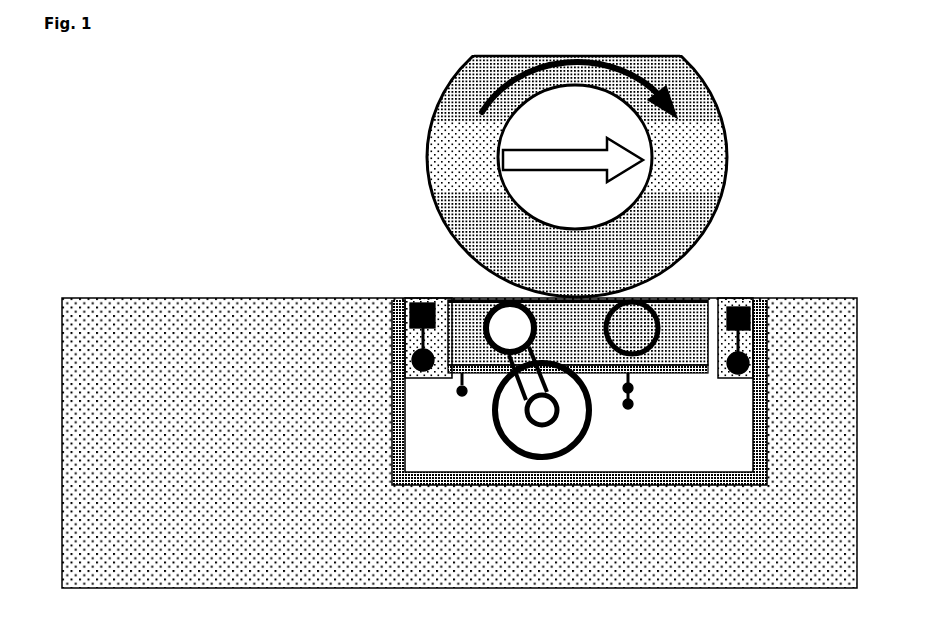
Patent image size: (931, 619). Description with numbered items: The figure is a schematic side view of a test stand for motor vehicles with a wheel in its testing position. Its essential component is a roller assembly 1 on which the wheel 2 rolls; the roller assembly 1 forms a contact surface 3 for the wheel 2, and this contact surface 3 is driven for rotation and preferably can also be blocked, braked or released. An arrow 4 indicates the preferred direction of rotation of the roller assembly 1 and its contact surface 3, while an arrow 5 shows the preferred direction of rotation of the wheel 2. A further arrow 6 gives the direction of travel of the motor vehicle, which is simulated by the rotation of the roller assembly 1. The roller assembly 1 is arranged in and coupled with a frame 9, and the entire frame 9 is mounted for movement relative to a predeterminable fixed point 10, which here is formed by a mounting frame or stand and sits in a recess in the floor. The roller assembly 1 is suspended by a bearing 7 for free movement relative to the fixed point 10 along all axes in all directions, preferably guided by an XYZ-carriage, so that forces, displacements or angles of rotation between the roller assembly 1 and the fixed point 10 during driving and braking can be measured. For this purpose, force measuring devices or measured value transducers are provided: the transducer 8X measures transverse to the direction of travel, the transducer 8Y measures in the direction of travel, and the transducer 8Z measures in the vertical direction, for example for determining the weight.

The roller assembly 1 is at (726, 265).
The wheel 2 is at (447, 112).
The contact surface 3 is at (633, 294).
The arrow 4 is at (440, 298).
The arrow 5 is at (636, 57).
The arrow 6 is at (538, 160).
The bearing 7 is at (410, 357).
The force measuring device 8X is at (637, 403).
The force measuring device 8Y is at (457, 393).
The force measuring device 8Z is at (425, 305).
The frame 9 is at (428, 297).
The fixed point 10 is at (398, 420).